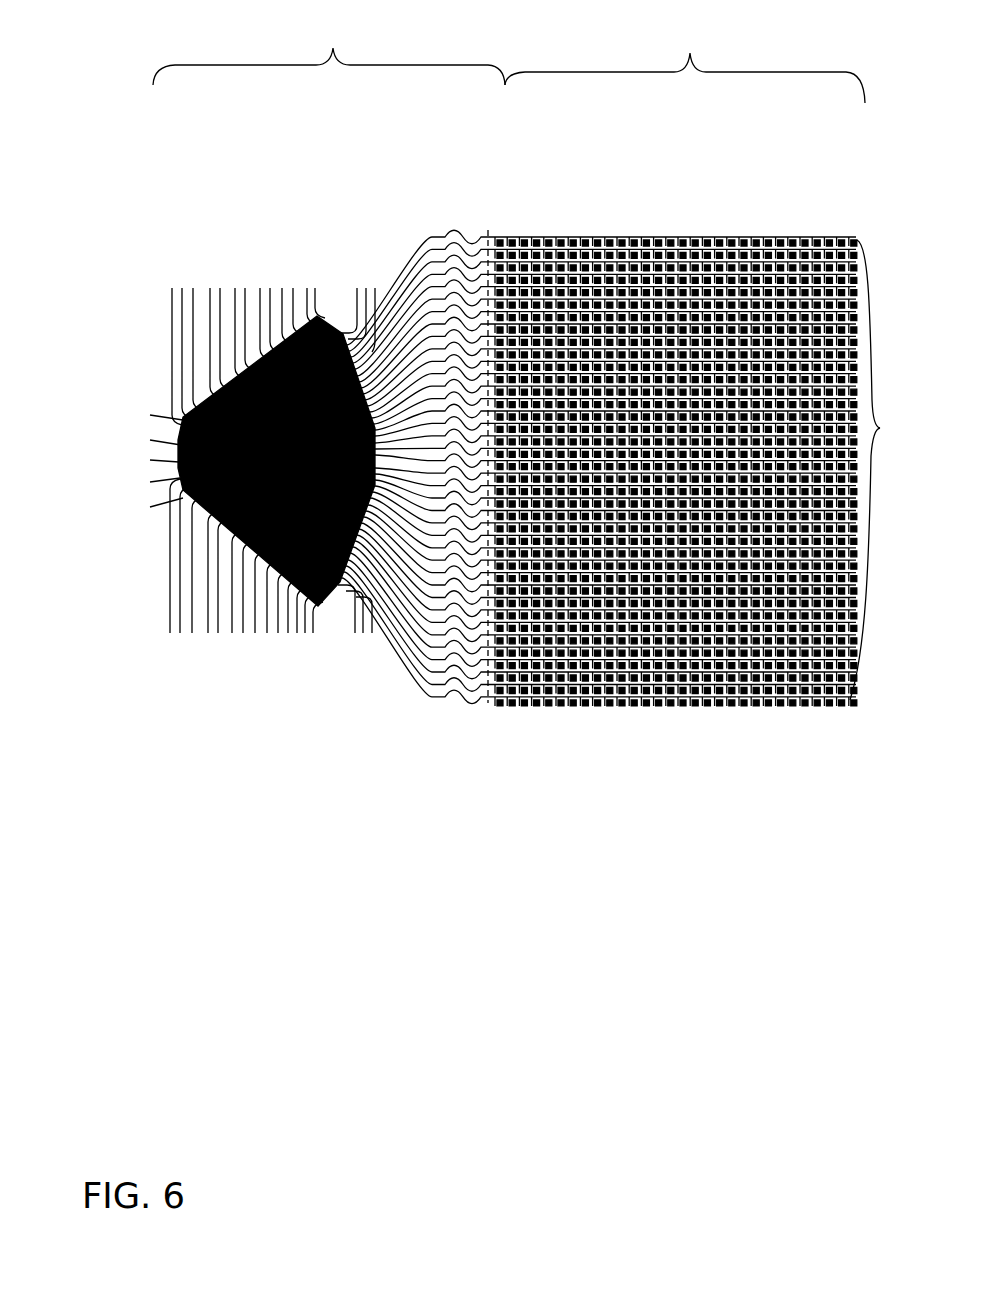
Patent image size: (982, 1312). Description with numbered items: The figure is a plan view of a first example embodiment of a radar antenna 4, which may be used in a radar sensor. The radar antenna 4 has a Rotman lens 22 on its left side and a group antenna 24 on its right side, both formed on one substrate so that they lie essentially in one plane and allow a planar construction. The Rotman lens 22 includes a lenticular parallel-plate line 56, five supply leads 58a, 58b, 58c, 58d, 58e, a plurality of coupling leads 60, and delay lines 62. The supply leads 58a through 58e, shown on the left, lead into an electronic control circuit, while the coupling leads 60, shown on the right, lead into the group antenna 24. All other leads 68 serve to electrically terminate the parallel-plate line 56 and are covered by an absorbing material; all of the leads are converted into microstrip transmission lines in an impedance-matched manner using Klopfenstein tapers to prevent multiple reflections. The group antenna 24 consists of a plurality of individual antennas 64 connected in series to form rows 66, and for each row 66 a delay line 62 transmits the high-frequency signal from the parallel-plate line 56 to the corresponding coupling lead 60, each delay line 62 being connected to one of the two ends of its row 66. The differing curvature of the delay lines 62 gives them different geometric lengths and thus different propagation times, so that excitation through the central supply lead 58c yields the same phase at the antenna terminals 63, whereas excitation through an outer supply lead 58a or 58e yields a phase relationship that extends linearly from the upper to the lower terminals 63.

The radar antenna 4 is at (290, 816).
The Rotman lens 22 is at (329, 52).
The group antenna 24 is at (685, 66).
The lenticular parallel-plate line 56 is at (205, 546).
The supply lead 58a is at (150, 415).
The supply lead 58b is at (150, 440).
The central supply lead 58c is at (150, 460).
The supply lead 58d is at (150, 482).
The supply lead 58e is at (150, 507).
The coupling leads 60 is at (383, 383).
The delay lines 62 is at (453, 322).
The antenna terminals 63 is at (490, 233).
The individual antennas 64 is at (613, 292).
The rows 66 is at (880, 470).
The terminating leads 68 is at (374, 311).